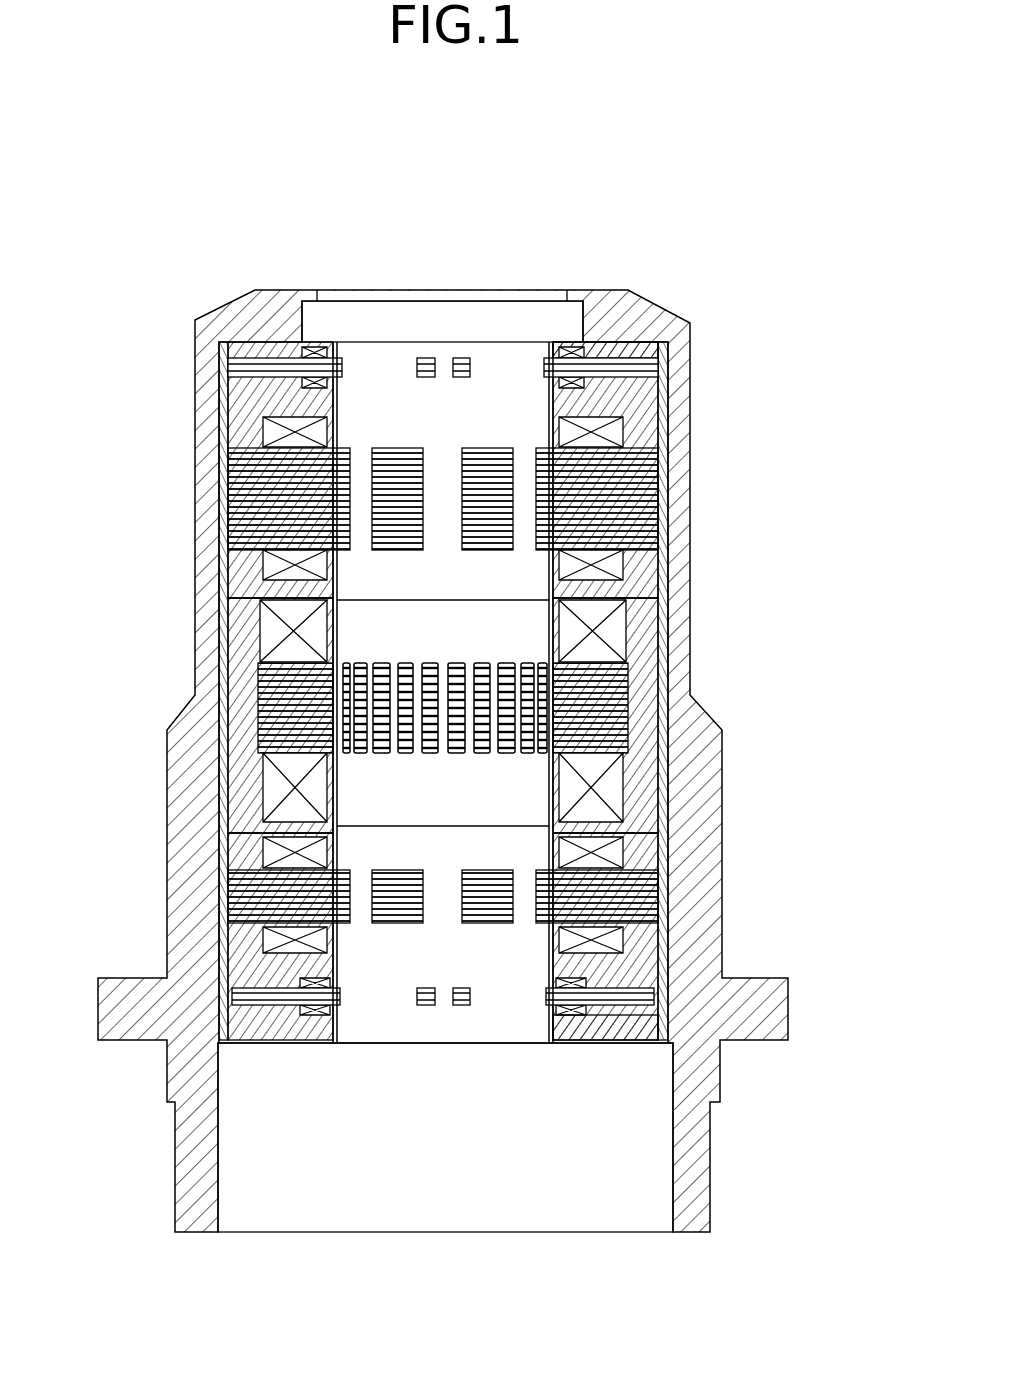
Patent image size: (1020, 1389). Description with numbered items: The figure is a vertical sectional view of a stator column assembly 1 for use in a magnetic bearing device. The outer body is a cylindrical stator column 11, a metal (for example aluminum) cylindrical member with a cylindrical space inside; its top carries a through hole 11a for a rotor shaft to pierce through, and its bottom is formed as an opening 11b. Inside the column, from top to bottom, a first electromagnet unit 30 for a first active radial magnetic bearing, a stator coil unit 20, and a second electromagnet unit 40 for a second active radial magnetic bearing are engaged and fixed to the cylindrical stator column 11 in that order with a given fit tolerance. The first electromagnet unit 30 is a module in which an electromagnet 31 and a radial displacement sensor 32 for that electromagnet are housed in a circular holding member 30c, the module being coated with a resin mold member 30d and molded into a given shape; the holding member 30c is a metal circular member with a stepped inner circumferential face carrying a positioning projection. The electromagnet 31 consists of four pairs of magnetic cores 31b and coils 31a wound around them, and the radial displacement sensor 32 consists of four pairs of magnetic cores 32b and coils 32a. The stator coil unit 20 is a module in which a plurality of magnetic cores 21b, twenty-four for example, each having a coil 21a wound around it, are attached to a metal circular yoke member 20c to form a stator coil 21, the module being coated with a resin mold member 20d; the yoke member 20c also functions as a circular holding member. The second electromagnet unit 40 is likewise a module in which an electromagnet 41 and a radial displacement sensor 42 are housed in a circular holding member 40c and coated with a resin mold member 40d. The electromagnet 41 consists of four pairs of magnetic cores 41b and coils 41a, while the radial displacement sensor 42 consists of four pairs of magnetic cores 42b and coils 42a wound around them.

The stator column assembly 1 is at (677, 292).
The cylindrical stator column 11 is at (193, 760).
The through hole 11a is at (460, 293).
The opening 11b is at (487, 1208).
The stator coil unit 20 is at (359, 715).
The circular yoke member 20c is at (247, 690).
The resin mold member 20d is at (257, 633).
The stator coil 21 is at (689, 742).
The coil 21a is at (605, 790).
The magnetic core 21b is at (600, 690).
The first electromagnet unit 30 is at (436, 454).
The circular holding member 30c is at (230, 393).
The resin mold member 30d is at (247, 436).
The electromagnet 31 is at (675, 514).
The coil 31a is at (610, 563).
The magnetic core 31b is at (622, 505).
The radial displacement sensor 32 is at (678, 355).
The coil 32a is at (584, 386).
The magnetic core 32b is at (660, 338).
The second electromagnet unit 40 is at (447, 988).
The circular holding member 40c is at (245, 872).
The resin mold member 40d is at (168, 1072).
The electromagnet 41 is at (683, 909).
The coil 41a is at (610, 935).
The magnetic core 41b is at (605, 895).
The radial displacement sensor 42 is at (690, 1060).
The coil 42a is at (640, 1047).
The magnetic core 42b is at (667, 997).